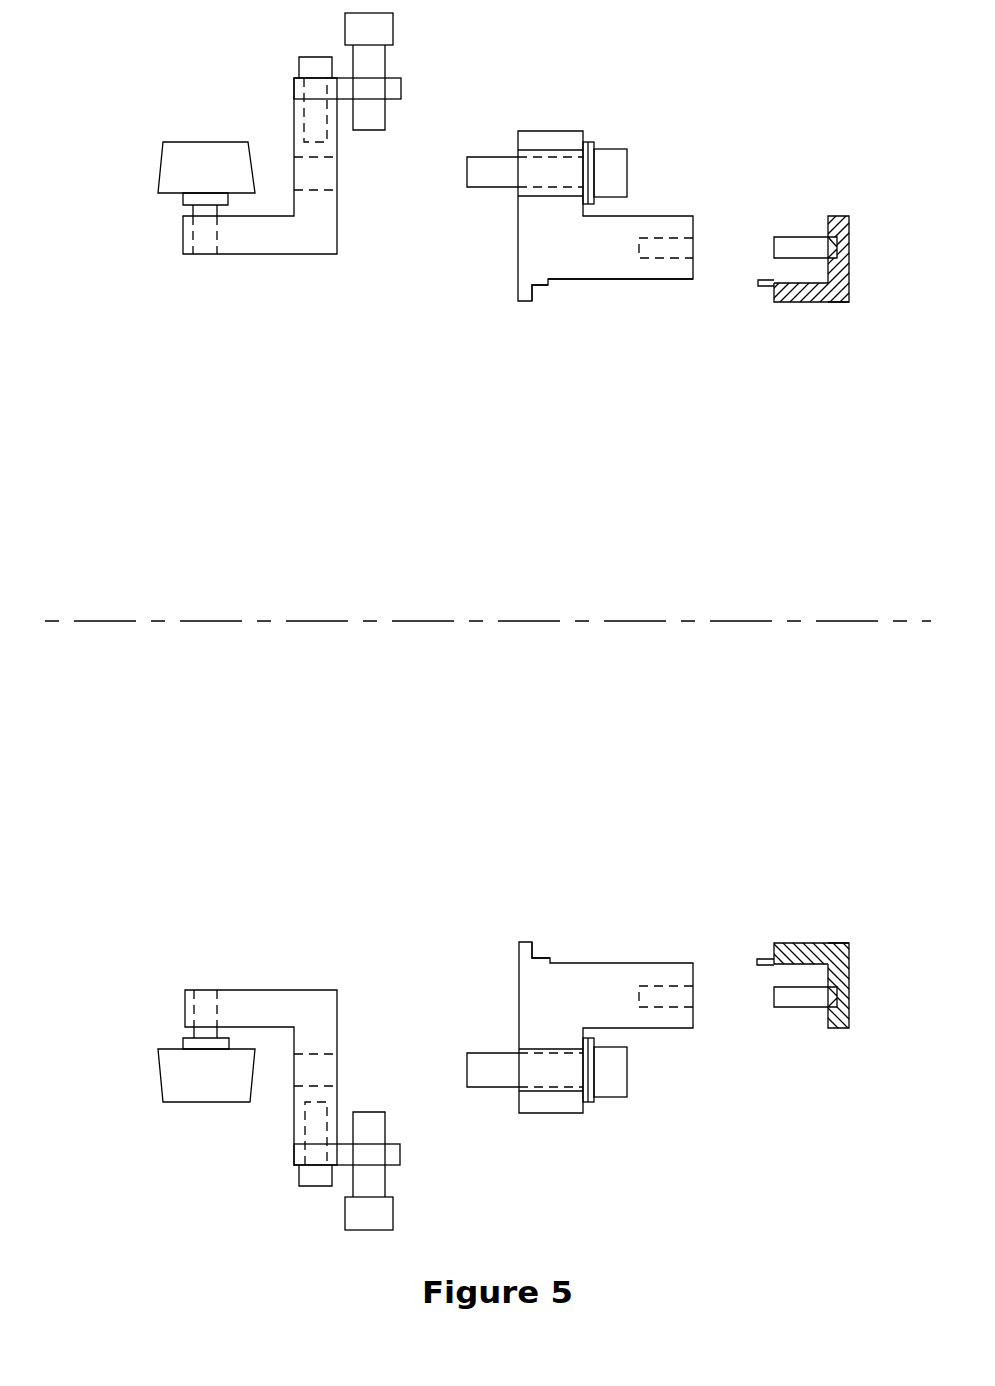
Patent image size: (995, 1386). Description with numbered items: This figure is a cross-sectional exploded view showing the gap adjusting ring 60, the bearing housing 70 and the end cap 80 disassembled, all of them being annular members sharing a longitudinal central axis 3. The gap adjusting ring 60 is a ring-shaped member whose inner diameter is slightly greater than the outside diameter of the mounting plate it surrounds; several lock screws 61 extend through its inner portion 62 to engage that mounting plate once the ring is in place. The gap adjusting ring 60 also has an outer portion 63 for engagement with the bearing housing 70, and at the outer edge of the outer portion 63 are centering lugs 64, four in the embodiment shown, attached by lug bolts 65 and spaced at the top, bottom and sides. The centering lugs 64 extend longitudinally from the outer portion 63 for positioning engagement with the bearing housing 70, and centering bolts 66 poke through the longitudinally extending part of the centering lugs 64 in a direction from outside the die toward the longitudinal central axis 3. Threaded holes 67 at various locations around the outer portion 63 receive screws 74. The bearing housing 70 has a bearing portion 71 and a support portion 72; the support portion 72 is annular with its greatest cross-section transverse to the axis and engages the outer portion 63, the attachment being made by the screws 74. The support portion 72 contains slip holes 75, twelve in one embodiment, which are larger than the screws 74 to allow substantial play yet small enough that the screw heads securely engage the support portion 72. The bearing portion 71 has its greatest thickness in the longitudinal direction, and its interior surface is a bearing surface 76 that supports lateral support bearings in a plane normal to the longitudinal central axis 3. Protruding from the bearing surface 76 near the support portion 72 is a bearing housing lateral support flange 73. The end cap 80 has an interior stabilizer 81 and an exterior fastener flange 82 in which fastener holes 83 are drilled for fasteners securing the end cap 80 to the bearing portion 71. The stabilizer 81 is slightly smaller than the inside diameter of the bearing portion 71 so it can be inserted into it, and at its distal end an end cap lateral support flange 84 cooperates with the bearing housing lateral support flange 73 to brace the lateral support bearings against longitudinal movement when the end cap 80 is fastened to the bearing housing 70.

The longitudinal central axis 3 is at (638, 621).
The gap adjusting ring 60 is at (226, 77).
The lock screws 61 is at (173, 163).
The inner portion 62 is at (183, 230).
The outer portion 63 is at (294, 139).
The centering lugs 64 is at (393, 90).
The lug bolts 65 is at (299, 57).
The centering bolts 66 is at (380, 31).
The threaded holes 67 is at (320, 170).
The bearing housing 70 is at (671, 135).
The bearing portion 71 is at (622, 235).
The support portion 72 is at (547, 140).
The bearing housing lateral support flange 73 is at (550, 285).
The screws 74 is at (490, 178).
The slip holes 75 is at (530, 150).
The bearing surface 76 is at (622, 282).
The end cap 80 is at (834, 183).
The stabilizer 81 is at (790, 295).
The fastener flange 82 is at (847, 216).
The fastener holes 83 is at (850, 990).
The end cap lateral support flange 84 is at (758, 280).